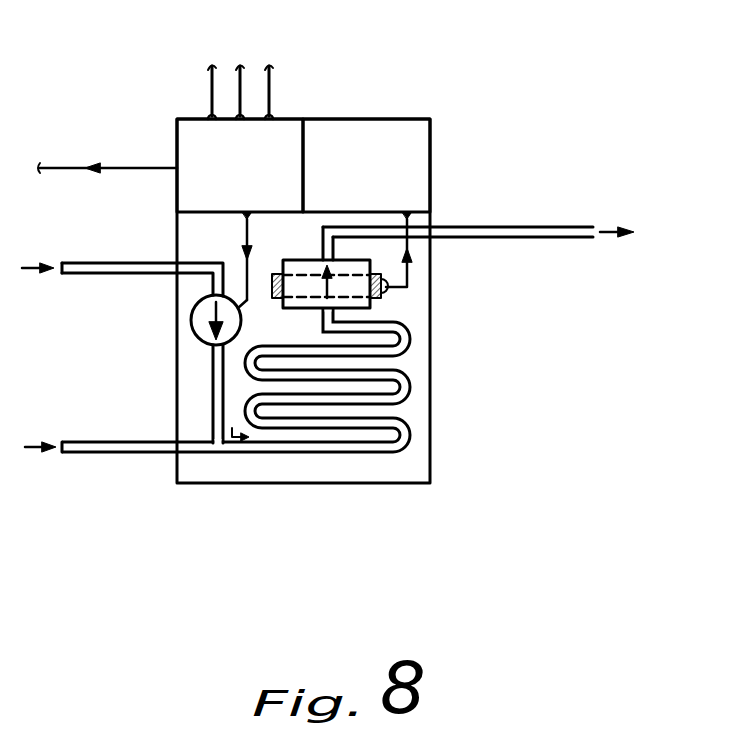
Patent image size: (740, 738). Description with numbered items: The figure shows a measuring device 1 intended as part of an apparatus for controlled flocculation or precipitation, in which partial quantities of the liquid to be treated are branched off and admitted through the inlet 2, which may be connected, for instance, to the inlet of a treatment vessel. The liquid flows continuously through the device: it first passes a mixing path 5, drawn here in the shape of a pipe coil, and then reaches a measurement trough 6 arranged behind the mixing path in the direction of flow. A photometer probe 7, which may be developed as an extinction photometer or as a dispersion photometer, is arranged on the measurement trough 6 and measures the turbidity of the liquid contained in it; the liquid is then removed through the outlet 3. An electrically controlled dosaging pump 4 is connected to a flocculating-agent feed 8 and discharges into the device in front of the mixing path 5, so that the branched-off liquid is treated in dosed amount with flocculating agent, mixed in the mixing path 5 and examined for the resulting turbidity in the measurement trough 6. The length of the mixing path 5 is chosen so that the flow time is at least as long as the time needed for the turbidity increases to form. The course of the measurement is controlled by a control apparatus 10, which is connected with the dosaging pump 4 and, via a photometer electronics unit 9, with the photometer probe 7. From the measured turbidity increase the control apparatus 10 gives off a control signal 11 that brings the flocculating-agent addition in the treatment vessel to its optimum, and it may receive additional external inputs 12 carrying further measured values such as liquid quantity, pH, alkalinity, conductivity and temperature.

The measuring device 1 is at (295, 520).
The inlet 2 is at (98, 455).
The outlet 3 is at (543, 238).
The dosaging pump 4 is at (187, 313).
The mixing path 5 is at (402, 388).
The measurement trough 6 is at (400, 312).
The photometer probe 7 is at (392, 300).
The flocculating-agent feed 8 is at (84, 277).
The photometer electronics unit 9 is at (351, 181).
The control apparatus 10 is at (223, 181).
The control signal 11 is at (75, 164).
The external inputs 12 is at (194, 63).